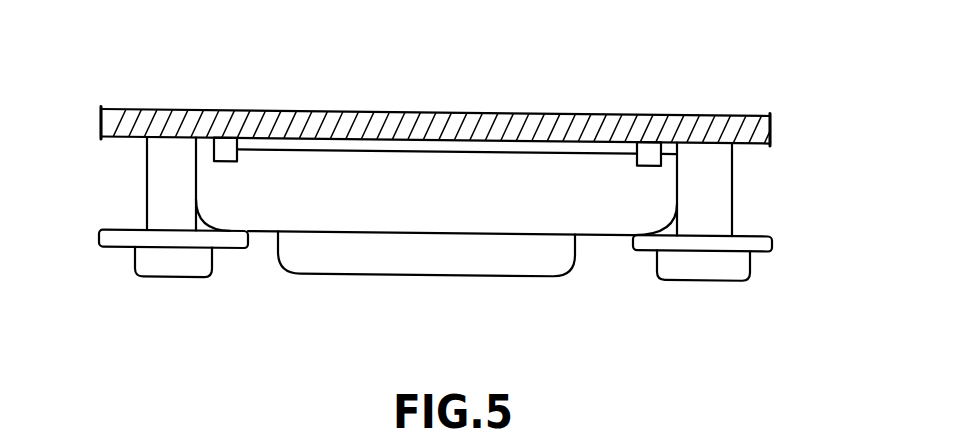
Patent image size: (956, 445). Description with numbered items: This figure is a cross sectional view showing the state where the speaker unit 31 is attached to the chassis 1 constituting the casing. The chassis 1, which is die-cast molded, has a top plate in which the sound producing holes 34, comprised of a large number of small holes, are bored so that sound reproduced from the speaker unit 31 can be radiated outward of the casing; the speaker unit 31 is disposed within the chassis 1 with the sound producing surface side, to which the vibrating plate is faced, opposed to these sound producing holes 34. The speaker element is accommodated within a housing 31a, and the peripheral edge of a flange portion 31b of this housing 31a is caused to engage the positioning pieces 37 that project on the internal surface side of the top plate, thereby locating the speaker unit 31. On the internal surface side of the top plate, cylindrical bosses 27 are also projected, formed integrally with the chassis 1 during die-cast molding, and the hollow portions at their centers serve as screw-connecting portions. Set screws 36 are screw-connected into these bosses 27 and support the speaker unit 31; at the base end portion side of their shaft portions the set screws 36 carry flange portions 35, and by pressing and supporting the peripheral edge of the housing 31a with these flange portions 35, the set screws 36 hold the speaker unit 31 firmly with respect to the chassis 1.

The chassis 1 is at (718, 110).
The sound producing holes 34 is at (252, 112).
The cylindrical bosses 27 is at (160, 196).
The positioning pieces 37 is at (222, 146).
The speaker unit 31 is at (436, 250).
The housing 31a is at (437, 256).
The flange portion 31b is at (277, 203).
The flange portions 35 is at (110, 235).
The set screws 36 is at (148, 262).